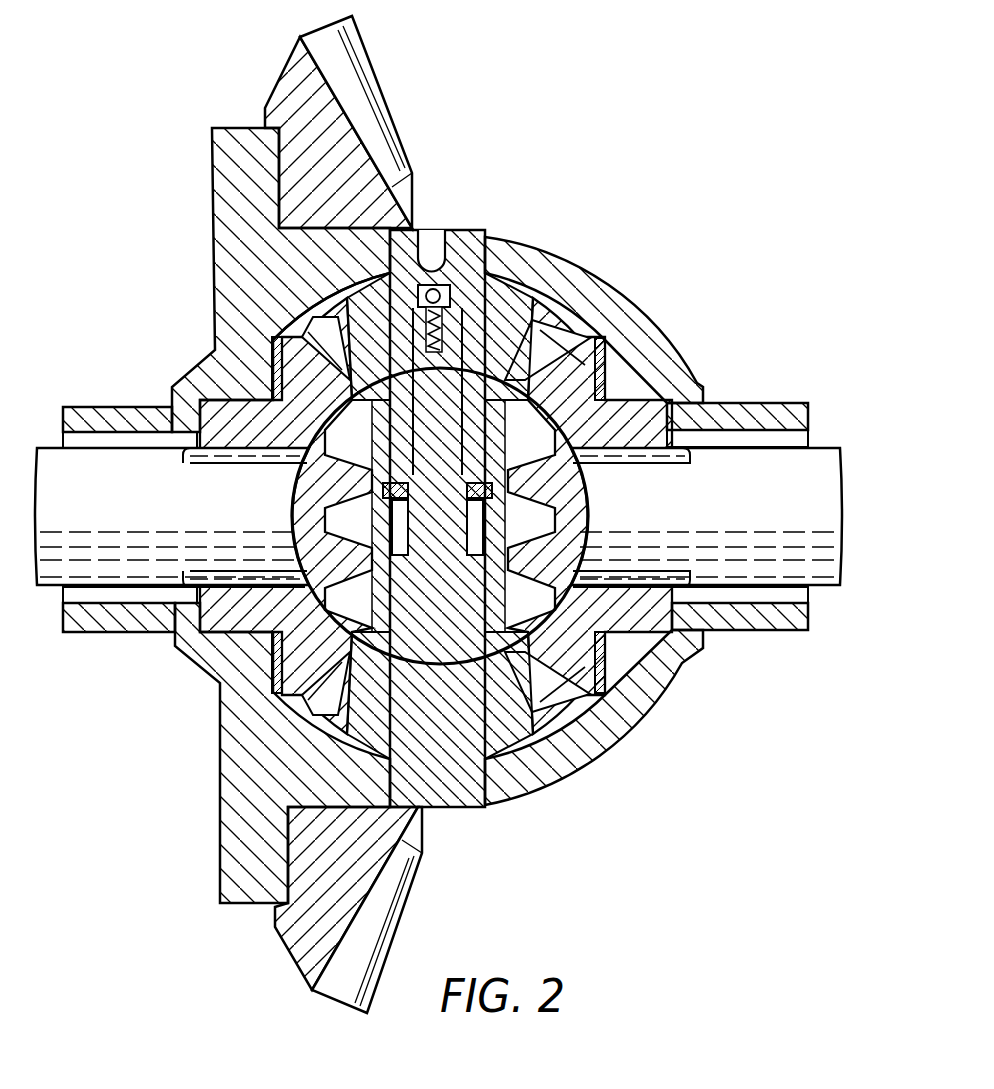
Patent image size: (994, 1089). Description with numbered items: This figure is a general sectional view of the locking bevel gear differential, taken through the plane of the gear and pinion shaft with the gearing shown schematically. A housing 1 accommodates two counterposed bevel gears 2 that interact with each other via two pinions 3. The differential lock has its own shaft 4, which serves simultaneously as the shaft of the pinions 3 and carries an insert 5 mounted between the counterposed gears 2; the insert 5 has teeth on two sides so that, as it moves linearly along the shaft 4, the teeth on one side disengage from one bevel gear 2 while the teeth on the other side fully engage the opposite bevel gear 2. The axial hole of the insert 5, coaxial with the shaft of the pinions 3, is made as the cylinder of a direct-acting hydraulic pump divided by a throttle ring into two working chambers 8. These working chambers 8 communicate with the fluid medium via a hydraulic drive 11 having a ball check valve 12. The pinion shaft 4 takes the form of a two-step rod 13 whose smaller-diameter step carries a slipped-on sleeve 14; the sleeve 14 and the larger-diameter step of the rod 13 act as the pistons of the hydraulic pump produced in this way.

The housing 1 is at (235, 160).
The bevel gear 2 is at (233, 418).
The pinion 3 is at (357, 308).
The shaft 4 is at (444, 205).
The insert 5 is at (605, 338).
The working chamber 8 is at (457, 530).
The hydraulic drive 11 is at (383, 275).
The ball check valve 12 is at (452, 280).
The two-step rod 13 is at (463, 775).
The sleeve 14 is at (445, 300).